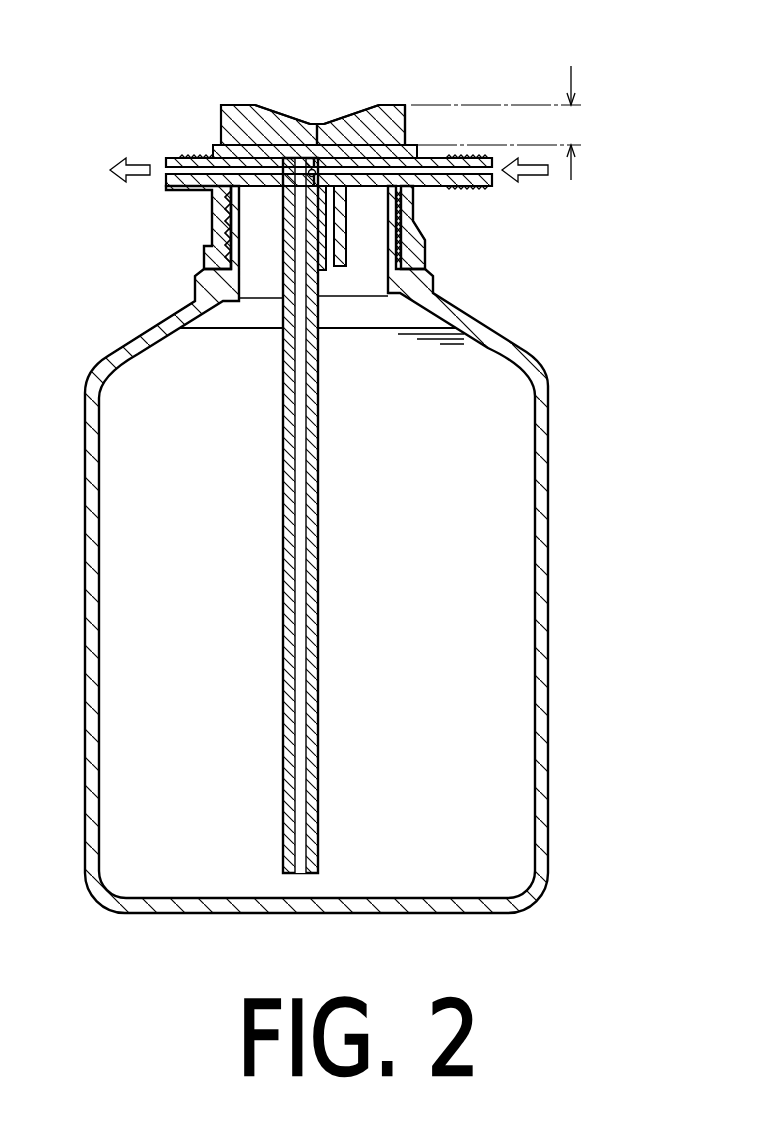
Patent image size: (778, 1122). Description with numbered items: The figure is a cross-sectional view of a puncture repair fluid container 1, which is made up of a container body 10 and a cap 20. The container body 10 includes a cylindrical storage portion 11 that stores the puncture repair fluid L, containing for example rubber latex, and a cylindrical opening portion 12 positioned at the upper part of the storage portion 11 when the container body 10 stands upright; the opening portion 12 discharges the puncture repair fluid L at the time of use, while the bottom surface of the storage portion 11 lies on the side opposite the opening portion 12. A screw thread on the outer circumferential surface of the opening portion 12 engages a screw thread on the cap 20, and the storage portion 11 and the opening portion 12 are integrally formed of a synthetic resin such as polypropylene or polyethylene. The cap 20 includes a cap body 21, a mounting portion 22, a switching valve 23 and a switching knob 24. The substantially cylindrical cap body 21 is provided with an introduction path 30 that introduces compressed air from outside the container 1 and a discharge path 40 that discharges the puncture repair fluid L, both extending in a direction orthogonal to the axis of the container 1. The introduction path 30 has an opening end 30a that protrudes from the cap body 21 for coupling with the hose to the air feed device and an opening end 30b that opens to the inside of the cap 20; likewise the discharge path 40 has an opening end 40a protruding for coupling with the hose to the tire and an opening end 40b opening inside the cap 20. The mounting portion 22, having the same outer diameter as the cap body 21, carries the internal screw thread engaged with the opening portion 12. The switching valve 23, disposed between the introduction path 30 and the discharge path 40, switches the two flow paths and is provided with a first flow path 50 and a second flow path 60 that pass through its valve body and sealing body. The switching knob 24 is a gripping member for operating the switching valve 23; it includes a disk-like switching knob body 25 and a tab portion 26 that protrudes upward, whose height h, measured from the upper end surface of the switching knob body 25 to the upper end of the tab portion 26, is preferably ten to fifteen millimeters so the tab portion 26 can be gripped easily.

The puncture repair fluid container 1 is at (122, 95).
The container body 10 is at (546, 466).
The storage portion 11 is at (538, 535).
The opening portion 12 is at (400, 277).
The cap 20 is at (342, 172).
The cap body 21 is at (204, 145).
The mounting portion 22 is at (404, 246).
The switching valve 23 is at (183, 296).
The switching knob 24 is at (254, 93).
The switching knob body 25 is at (401, 134).
The tab portion 26 is at (360, 130).
The introduction path 30 is at (445, 129).
The opening end 30a is at (474, 146).
The opening end 30b is at (368, 129).
The discharge path 40 is at (213, 132).
The opening end 40a is at (171, 148).
The opening end 40b is at (262, 96).
The first flow path 50 is at (390, 210).
The second flow path 60 is at (304, 160).
The height of the tab portion h is at (505, 123).
The puncture repair fluid L is at (490, 404).